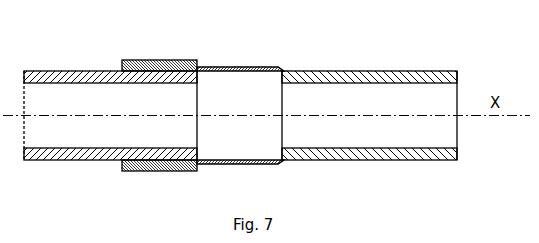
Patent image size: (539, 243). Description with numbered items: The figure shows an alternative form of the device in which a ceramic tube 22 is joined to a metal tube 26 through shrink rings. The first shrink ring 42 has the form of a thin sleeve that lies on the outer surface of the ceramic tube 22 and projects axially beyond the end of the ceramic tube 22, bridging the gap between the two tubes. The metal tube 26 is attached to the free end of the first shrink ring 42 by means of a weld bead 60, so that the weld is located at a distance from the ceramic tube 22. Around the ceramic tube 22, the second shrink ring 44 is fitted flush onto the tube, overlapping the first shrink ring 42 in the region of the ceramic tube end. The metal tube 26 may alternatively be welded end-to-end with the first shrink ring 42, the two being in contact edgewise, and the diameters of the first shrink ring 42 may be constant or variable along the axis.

The ceramic tube 22 is at (62, 71).
The second shrink ring 44 is at (163, 60).
The first shrink ring 42 is at (244, 67).
The weld bead 60 is at (287, 70).
The metal tube 26 is at (353, 71).